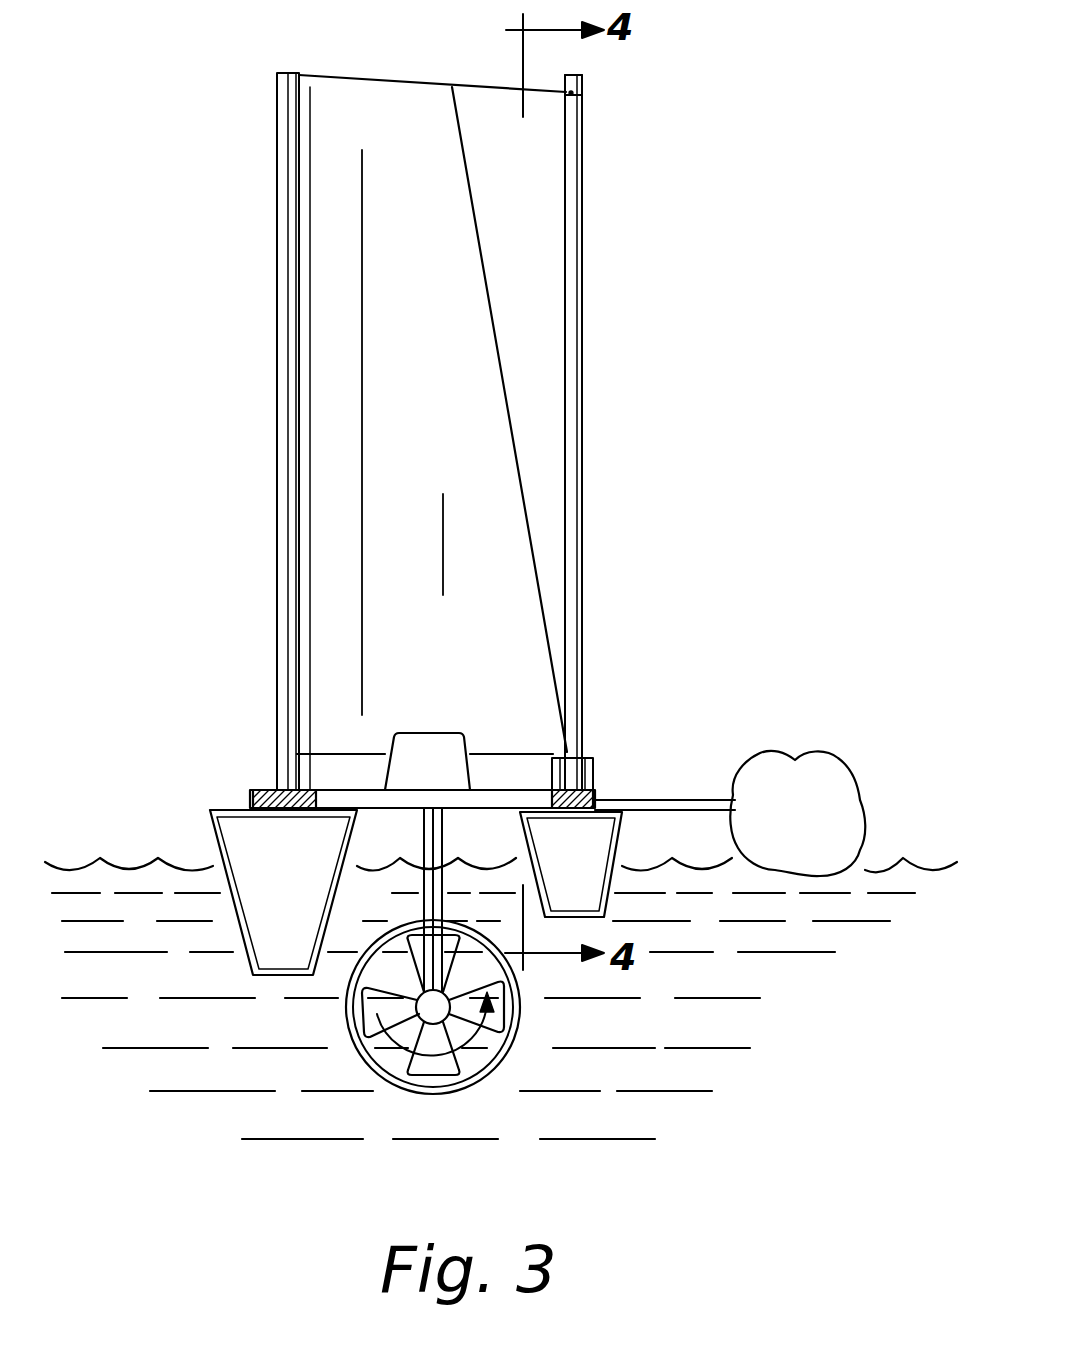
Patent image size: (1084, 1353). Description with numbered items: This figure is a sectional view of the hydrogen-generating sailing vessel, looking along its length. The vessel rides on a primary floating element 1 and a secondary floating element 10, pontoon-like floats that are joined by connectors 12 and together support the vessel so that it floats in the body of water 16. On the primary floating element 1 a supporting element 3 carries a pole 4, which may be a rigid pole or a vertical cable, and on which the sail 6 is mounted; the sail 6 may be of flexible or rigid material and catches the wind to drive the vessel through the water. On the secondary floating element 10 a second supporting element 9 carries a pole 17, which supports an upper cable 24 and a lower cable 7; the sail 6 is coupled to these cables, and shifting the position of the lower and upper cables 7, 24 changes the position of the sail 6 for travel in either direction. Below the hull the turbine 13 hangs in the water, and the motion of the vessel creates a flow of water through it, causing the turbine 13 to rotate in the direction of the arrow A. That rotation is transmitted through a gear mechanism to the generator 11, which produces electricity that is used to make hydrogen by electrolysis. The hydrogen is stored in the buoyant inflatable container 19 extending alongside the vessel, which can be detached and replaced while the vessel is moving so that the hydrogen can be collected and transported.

The primary floating element 1 is at (208, 812).
The supporting element 3 is at (258, 788).
The pole 4 is at (277, 76).
The sail 6 is at (392, 104).
The lower cable 7 is at (569, 752).
The supporting element 9 is at (597, 797).
The secondary floating element 10 is at (624, 845).
The generator 11 is at (445, 771).
The connector 12 is at (340, 798).
The turbine 13 is at (421, 1051).
The body of water 16 is at (878, 878).
The pole 17 is at (586, 108).
The inflatable container 19 is at (838, 775).
The upper cable 24 is at (572, 93).
The arrow A is at (437, 1070).